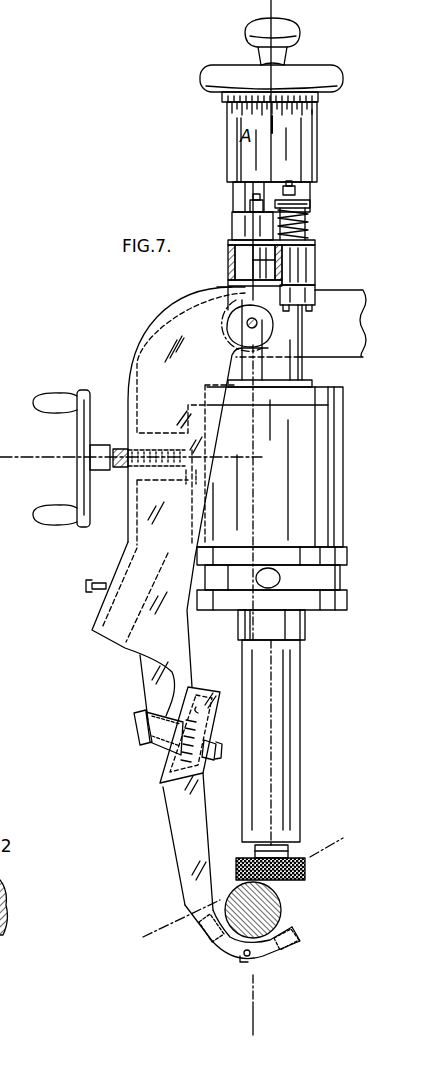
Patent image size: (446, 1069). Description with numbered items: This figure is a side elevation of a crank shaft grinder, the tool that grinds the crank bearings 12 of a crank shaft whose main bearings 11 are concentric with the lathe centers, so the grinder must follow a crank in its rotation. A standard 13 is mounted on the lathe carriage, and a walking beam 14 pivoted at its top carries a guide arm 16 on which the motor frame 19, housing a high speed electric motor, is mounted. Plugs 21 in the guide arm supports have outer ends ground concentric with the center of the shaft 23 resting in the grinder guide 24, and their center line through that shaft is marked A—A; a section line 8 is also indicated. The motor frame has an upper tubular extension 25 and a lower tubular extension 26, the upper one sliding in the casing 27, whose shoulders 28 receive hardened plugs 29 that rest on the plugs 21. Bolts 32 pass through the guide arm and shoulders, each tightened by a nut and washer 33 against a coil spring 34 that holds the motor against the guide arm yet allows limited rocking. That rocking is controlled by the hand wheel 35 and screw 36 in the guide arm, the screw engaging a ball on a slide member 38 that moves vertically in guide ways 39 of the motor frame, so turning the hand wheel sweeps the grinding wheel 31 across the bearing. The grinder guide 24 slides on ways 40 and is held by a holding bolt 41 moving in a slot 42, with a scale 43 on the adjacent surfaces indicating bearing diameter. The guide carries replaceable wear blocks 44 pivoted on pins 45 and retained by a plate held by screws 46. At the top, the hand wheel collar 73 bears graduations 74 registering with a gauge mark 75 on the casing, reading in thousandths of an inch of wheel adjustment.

The section line 8- 8 is at (269, 12).
The crank bearings 12 is at (304, 74).
The collar 73 is at (310, 110).
The graduations 74 is at (232, 112).
The gauge mark 75 is at (268, 126).
The casing 27 is at (310, 150).
The nut and washer 33 is at (296, 194).
The coil spring 34 is at (298, 208).
The shoulders or lugs 28 is at (232, 226).
The hardened plugs 29 is at (244, 252).
The plugs 21 is at (243, 270).
The bolts 32 is at (296, 266).
The walking beam 14 is at (342, 298).
The upper tubular extension 25 is at (290, 342).
The guide arm 16 is at (174, 318).
The guide ways 39 is at (155, 455).
The slide member 38 is at (195, 468).
The hand wheel 35 is at (88, 390).
The screw 36 is at (114, 448).
The main bearings 11 is at (247, 457).
The motor frame 19 is at (338, 461).
The lower tubular extension 26 is at (290, 688).
The slot 42 is at (196, 705).
The holding bolt 41 is at (132, 741).
The scale 43 is at (180, 758).
The ways 40 is at (176, 803).
The grinder guide 24 is at (188, 858).
The standard 13 is at (340, 841).
The grinding wheel 31 is at (308, 872).
The shaft 23 is at (278, 908).
The pins 45 is at (246, 938).
The wear blocks 44 is at (208, 928).
The screws 46 is at (240, 966).